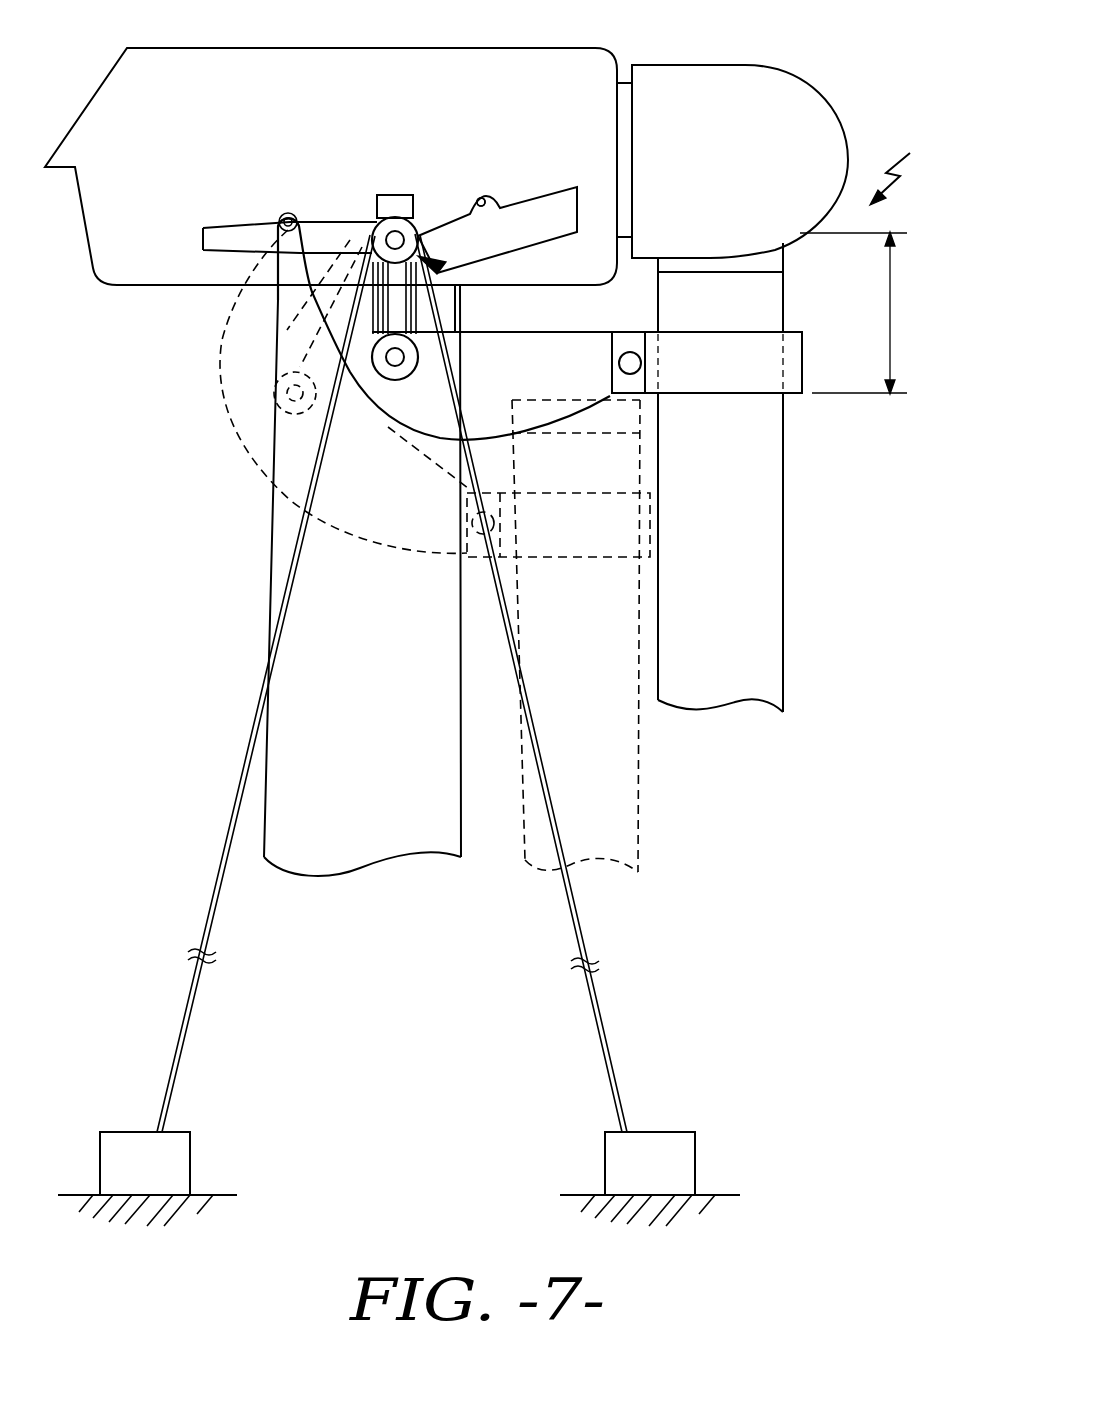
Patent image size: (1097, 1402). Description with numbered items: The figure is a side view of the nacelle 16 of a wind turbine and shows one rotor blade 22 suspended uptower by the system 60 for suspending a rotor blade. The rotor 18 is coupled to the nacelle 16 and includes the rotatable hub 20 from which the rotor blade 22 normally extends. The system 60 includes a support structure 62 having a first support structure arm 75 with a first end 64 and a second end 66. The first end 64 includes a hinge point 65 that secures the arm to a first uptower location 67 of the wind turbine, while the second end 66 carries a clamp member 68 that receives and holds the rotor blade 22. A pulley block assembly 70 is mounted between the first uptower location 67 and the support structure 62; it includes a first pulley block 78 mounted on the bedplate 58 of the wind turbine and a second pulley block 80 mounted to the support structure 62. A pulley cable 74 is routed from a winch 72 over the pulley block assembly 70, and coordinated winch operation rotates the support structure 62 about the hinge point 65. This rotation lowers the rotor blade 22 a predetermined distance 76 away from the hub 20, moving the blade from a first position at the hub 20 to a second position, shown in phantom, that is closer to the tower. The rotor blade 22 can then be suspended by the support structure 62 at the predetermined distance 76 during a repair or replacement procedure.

The nacelle 16 is at (130, 294).
The rotor 18 is at (748, 58).
The rotatable hub 20 is at (806, 124).
The rotor blade 22 is at (787, 626).
The bedplate 58 is at (541, 203).
The system for suspending a rotor blade uptower 60 is at (912, 165).
The support structure 62 is at (440, 445).
The first end 64 is at (292, 270).
The hinge point 65 is at (291, 212).
The second end 66 is at (602, 367).
The first uptower location 67 is at (281, 207).
The clamp member 68 is at (748, 380).
The pulley block assembly 70 is at (460, 264).
The winch 72 is at (192, 1146).
The pulley cable 74 is at (430, 226).
The first support structure arm 75 is at (488, 357).
The predetermined distance 76 is at (893, 322).
The first pulley block 78 is at (372, 297).
The second pulley block 80 is at (384, 381).